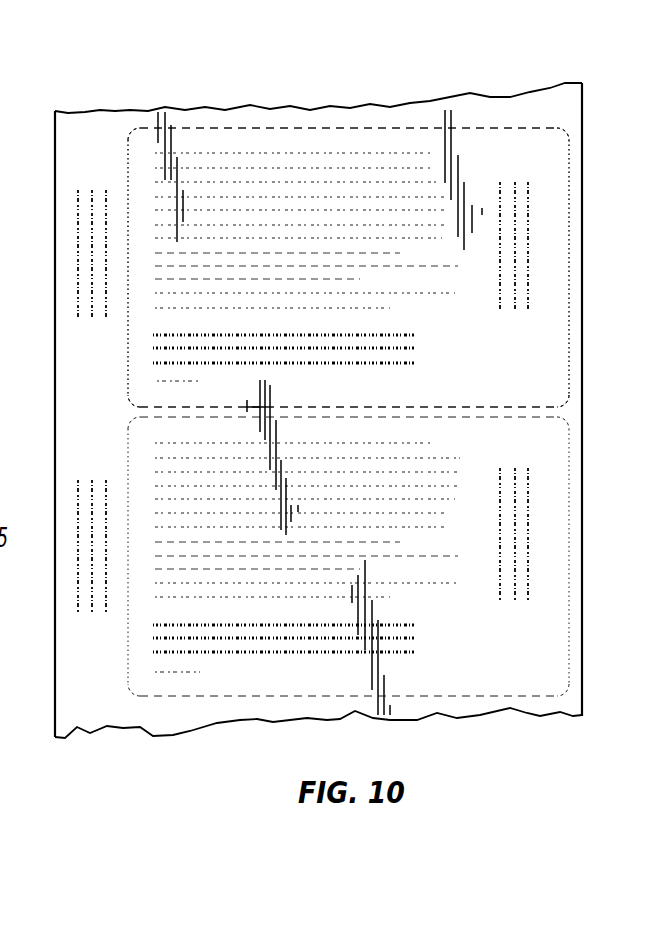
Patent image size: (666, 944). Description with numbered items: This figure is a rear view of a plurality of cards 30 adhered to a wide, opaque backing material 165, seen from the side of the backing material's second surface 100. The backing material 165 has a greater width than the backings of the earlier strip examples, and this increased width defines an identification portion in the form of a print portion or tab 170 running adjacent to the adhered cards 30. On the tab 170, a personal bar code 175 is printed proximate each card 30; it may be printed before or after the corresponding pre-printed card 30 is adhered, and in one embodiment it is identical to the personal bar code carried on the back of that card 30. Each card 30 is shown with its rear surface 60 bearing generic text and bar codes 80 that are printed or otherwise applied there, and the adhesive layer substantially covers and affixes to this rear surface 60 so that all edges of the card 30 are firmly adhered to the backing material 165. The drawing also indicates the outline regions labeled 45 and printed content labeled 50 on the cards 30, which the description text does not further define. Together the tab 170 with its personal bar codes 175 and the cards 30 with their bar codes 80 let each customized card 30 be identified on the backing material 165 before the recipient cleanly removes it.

The tab 170 is at (91, 98).
The second surface 100 is at (541, 99).
The backing material 165 is at (583, 115).
The personal bar code 175 is at (92, 190).
The label outline 45 is at (569, 190).
The card 30 is at (596, 238).
The printed label text 50 is at (125, 356).
The bar code 80 is at (418, 350).
The rear surface 60 is at (542, 367).